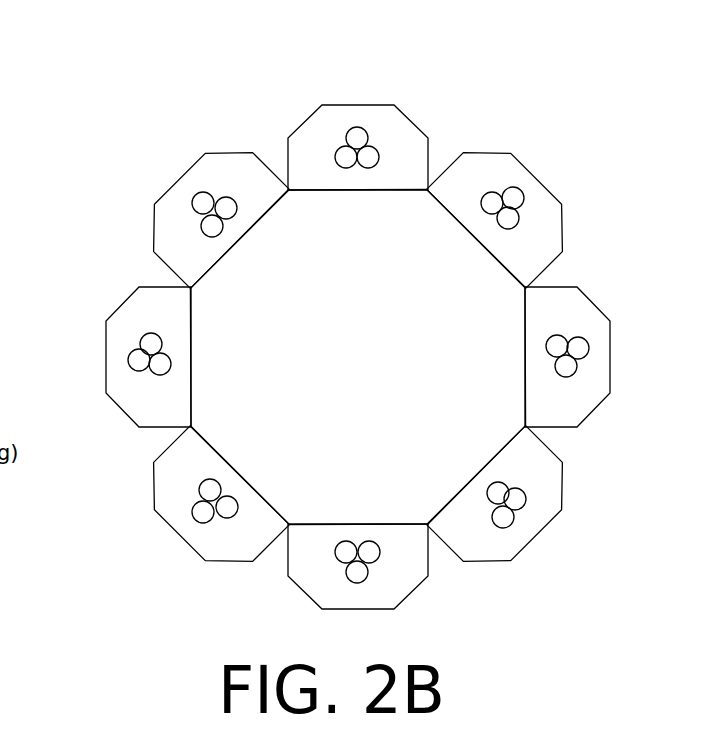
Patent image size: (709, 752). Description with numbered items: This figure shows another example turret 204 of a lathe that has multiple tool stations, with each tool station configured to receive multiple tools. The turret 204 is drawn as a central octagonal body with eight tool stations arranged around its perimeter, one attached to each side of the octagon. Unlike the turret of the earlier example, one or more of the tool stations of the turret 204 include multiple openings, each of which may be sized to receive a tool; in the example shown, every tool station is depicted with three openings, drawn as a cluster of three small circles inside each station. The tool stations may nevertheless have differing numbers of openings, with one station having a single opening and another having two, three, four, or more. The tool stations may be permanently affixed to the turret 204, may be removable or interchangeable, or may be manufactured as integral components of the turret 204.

The turret 204 is at (458, 95).